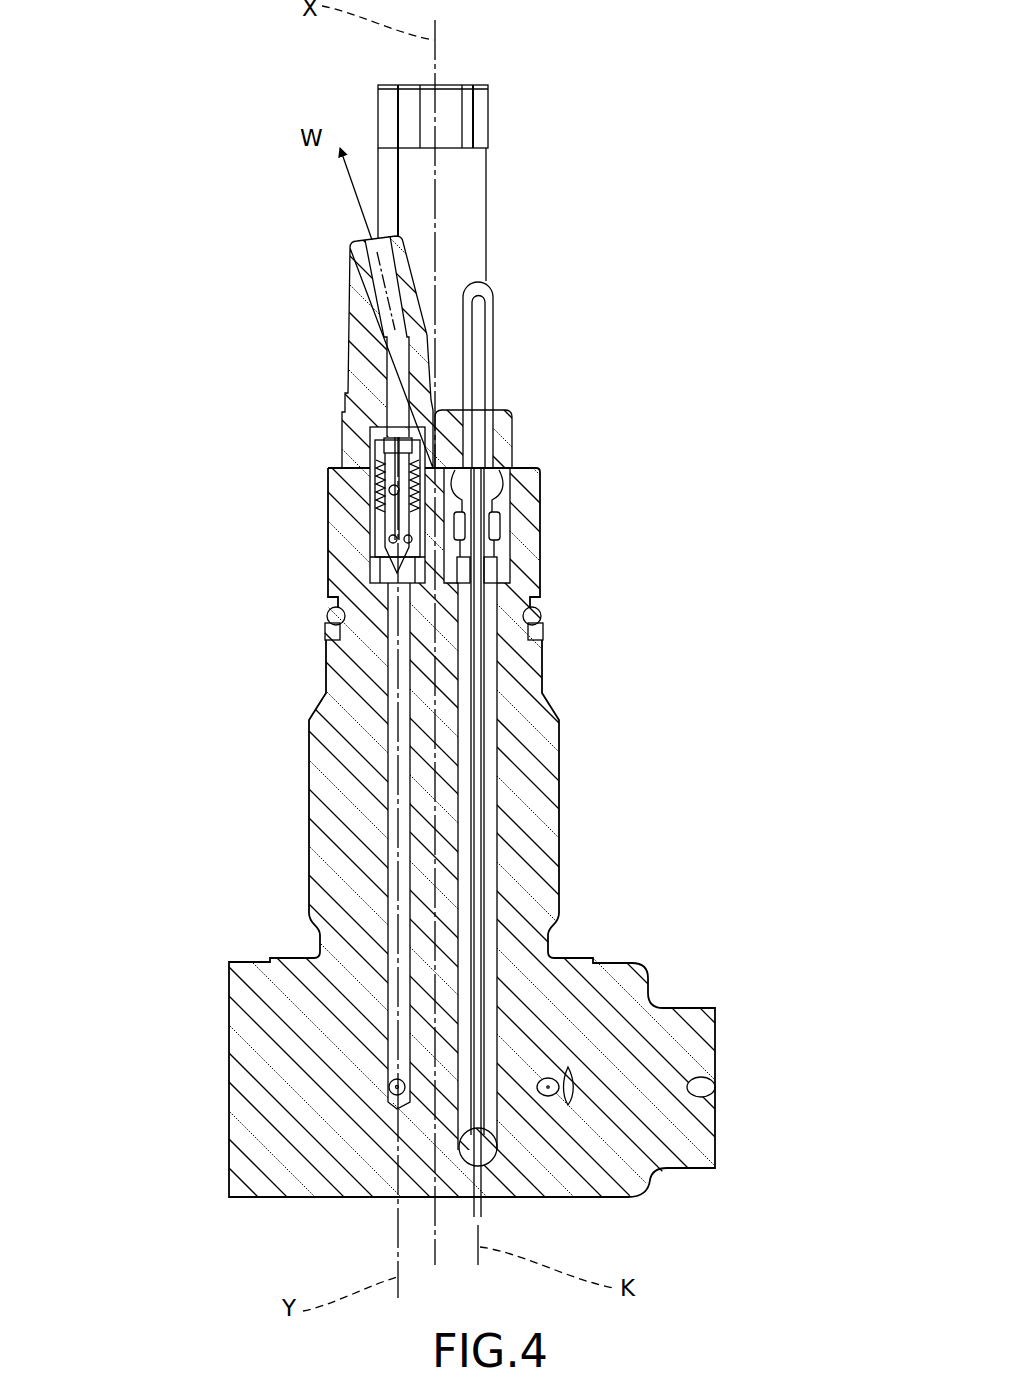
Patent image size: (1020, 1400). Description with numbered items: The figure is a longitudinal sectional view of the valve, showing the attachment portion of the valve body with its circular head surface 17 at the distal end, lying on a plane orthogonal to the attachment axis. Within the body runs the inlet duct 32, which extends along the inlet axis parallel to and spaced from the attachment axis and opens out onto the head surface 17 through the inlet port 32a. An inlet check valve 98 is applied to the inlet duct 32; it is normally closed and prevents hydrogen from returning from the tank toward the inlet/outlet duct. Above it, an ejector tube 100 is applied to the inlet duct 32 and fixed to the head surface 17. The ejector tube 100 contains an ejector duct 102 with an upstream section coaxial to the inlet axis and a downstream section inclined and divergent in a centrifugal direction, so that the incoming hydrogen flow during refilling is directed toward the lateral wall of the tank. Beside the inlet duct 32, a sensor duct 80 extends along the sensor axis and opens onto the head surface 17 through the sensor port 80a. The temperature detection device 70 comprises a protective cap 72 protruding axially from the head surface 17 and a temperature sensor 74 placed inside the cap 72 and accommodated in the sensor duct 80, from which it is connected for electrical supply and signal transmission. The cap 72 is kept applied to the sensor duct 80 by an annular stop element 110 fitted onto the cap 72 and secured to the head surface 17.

The head surface 17 is at (524, 462).
The inlet duct 32 is at (392, 1040).
The inlet port 32a is at (340, 445).
The temperature detection device 70 is at (497, 330).
The protective cap 72 is at (468, 310).
The temperature sensor 74 is at (491, 471).
The sensor duct 80 is at (490, 652).
The sensor port 80a is at (498, 566).
The inlet check valve 98 is at (361, 517).
The ejector tube 100 is at (362, 298).
The ejector duct 102 is at (218, 240).
The annular stop element 110 is at (503, 430).